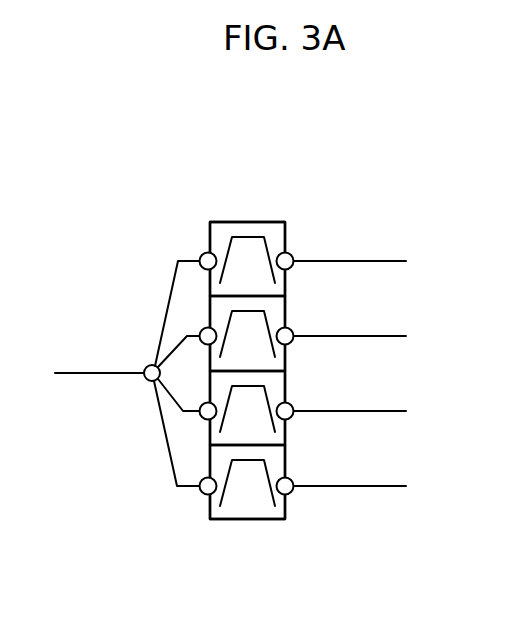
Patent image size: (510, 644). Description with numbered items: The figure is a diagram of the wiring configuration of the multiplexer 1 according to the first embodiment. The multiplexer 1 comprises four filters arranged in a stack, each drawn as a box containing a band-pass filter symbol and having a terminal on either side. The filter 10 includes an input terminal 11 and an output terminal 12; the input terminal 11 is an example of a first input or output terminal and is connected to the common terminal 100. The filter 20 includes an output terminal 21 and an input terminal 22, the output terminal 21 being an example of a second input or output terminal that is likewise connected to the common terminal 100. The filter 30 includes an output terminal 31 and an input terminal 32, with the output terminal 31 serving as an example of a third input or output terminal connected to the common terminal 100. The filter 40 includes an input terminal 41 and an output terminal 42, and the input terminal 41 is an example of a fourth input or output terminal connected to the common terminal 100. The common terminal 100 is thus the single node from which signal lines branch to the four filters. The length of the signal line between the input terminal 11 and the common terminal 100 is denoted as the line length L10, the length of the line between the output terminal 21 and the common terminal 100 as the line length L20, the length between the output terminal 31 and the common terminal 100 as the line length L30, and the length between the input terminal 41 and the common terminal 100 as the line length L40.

The multiplexer 1 is at (309, 184).
The filter 10 is at (286, 237).
The input terminal 11 is at (204, 269).
The output terminal 12 is at (291, 267).
The filter 20 is at (286, 315).
The output terminal 21 is at (204, 344).
The input terminal 22 is at (291, 342).
The filter 30 is at (286, 387).
The output terminal 31 is at (204, 419).
The input terminal 32 is at (291, 417).
The filter 40 is at (286, 463).
The input terminal 41 is at (204, 494).
The output terminal 42 is at (291, 492).
The common terminal 100 is at (147, 380).
The line length L10 is at (173, 275).
The line length L20 is at (167, 347).
The line length L30 is at (168, 397).
The line length L40 is at (170, 467).